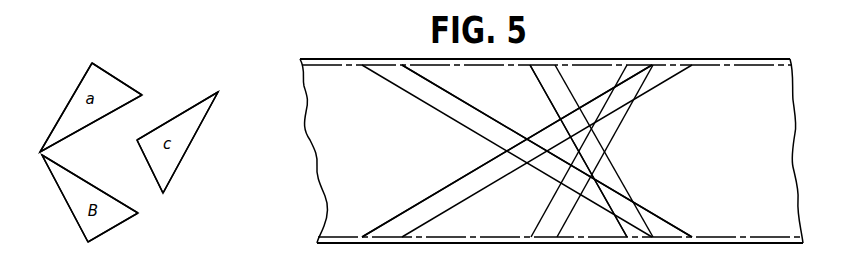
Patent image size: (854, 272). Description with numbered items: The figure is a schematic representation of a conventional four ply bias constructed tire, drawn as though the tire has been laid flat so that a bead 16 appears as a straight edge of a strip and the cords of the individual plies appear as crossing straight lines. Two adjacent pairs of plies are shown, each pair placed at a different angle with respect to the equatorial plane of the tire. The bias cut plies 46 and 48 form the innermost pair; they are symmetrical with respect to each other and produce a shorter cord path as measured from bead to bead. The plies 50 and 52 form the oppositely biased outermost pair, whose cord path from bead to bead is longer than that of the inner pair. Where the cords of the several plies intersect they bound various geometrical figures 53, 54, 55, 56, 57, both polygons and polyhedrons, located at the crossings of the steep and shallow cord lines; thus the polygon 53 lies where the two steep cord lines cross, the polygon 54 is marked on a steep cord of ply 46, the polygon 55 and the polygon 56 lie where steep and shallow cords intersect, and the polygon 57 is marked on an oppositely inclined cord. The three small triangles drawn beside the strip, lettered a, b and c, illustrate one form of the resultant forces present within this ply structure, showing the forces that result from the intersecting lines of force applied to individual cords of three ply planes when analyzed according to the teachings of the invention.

In FIG. 5, the bead 16 is at (686, 59).
In FIG. 5, the bias cut ply 46 is at (549, 71).
In FIG. 5b, the bias cut ply 46 is at (65, 202).
In FIG. 5c, the bias cut ply 46 is at (145, 162).
In FIG. 5, the bias cut ply 48 is at (552, 217).
In FIG. 5a, the bias cut ply 48 is at (66, 105).
In FIG. 5c, the bias cut ply 48 is at (190, 143).
In FIG. 5, the ply 50 is at (403, 222).
In FIG. 5a, the ply 50 is at (87, 131).
In FIG. 5b, the ply 50 is at (118, 228).
In FIG. 5c, the ply 50 is at (173, 117).
In FIG. 5, the ply 52 is at (670, 227).
In FIG. 5a, the ply 52 is at (118, 78).
In FIG. 5b, the ply 52 is at (123, 203).
In FIG. 5, the geometrical figure 53 is at (603, 150).
In FIG. 5, the geometrical figure 54 is at (558, 120).
In FIG. 5, the geometrical figure 55 is at (628, 200).
In FIG. 5, the geometrical figure 56 is at (503, 150).
In FIG. 5, the geometrical figure 57 is at (562, 180).